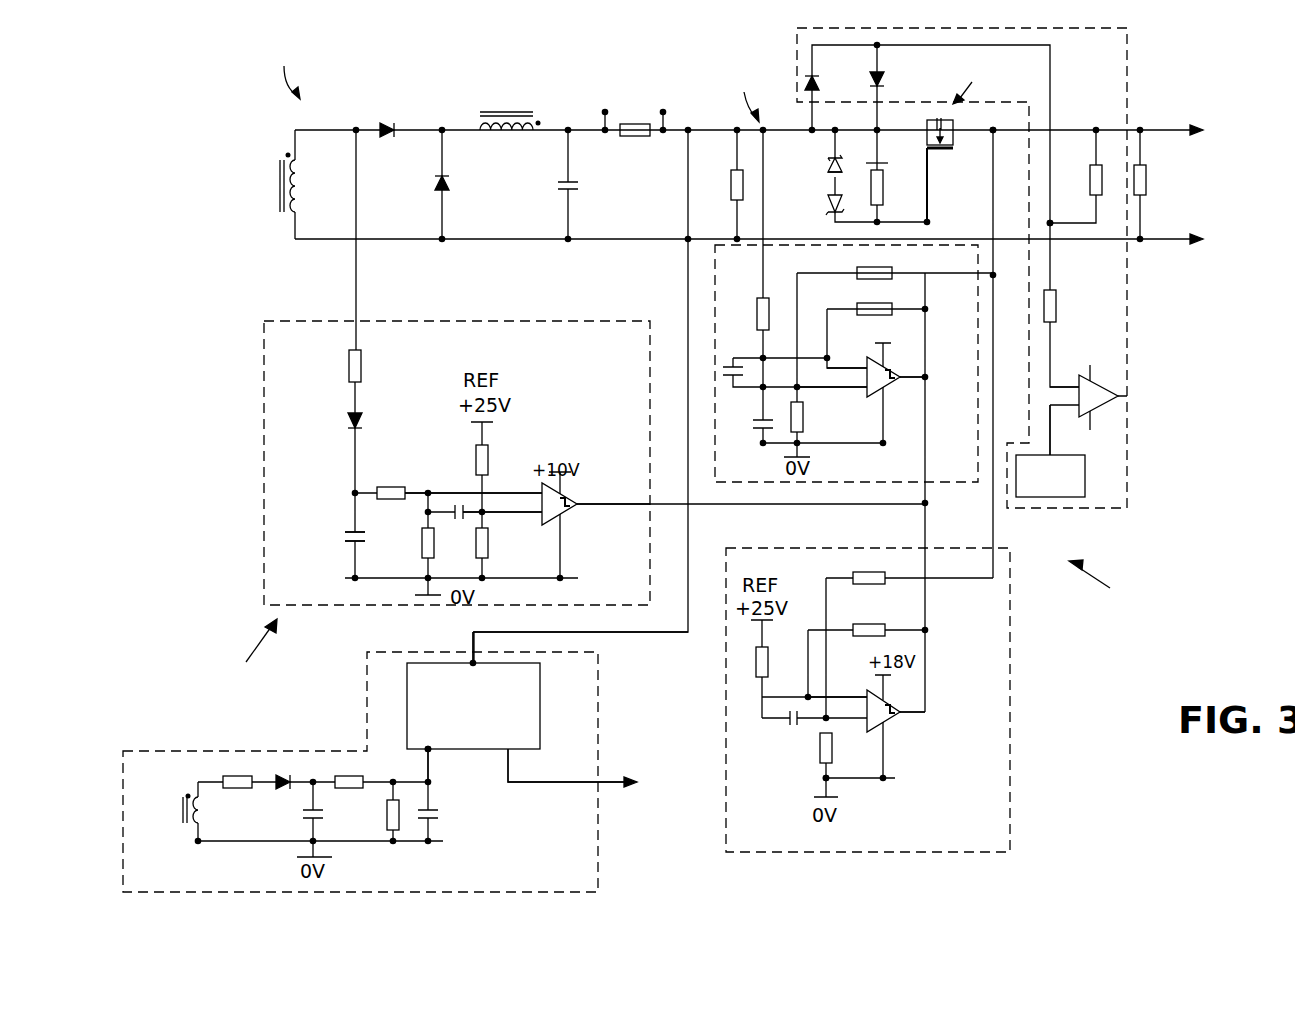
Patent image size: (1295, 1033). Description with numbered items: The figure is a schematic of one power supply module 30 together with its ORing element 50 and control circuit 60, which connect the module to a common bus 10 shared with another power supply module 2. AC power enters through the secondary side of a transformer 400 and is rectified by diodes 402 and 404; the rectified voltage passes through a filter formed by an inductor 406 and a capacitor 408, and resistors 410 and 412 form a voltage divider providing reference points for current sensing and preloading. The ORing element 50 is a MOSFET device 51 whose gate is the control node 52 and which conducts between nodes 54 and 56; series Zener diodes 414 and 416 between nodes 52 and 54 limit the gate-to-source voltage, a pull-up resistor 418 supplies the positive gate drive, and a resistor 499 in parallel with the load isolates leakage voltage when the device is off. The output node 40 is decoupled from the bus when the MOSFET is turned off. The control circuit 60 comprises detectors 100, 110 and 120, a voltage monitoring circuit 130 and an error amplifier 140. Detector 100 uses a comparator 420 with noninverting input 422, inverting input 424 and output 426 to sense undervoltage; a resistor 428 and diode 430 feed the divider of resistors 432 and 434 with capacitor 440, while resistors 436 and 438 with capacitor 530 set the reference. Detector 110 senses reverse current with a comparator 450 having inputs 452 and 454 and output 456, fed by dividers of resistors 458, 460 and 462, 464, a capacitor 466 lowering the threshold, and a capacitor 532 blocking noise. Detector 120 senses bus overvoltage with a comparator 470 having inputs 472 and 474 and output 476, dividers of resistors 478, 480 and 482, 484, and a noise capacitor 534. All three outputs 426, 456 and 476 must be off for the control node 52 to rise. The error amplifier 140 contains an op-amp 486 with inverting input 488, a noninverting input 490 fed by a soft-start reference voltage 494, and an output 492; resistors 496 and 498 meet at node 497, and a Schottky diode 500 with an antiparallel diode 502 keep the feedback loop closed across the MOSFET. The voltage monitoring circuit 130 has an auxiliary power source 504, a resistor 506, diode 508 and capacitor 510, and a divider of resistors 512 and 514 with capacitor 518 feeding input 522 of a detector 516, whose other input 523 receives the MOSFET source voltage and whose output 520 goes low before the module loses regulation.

The power supply module 2 is at (1098, 585).
The common bus 10 is at (1208, 130).
The power supply module 30 is at (281, 70).
The output node 40 is at (740, 95).
The ORing element 50 is at (962, 268).
The MOSFET device 51 is at (928, 152).
The control node 52 is at (930, 165).
The node 54 is at (912, 132).
The node 56 is at (961, 130).
The control circuit 60 is at (252, 659).
The detector 100 is at (489, 311).
The detector 110 is at (930, 486).
The detector 120 is at (720, 692).
The voltage monitoring circuit 130 is at (614, 860).
The error amplifier 140 is at (1128, 328).
The transformer 400 is at (288, 212).
The diode 402 is at (384, 123).
The diode 404 is at (436, 183).
The inductor 406 is at (504, 111).
The capacitor 408 is at (560, 183).
The resistor 410 is at (633, 122).
The resistor 412 is at (730, 189).
The diode 414 is at (826, 202).
The diode 416 is at (826, 168).
The resistor 418 is at (884, 190).
The comparator 420 is at (578, 518).
The noninverting input 422 is at (510, 483).
The inverting input 424 is at (520, 522).
The output 426 is at (606, 498).
The resistor 428 is at (361, 370).
The diode 430 is at (348, 422).
The resistor 432 is at (386, 490).
The resistor 434 is at (421, 551).
The resistor 436 is at (474, 458).
The resistor 438 is at (480, 542).
The capacitor 440 is at (346, 546).
The comparator 450 is at (888, 398).
The noninverting input 452 is at (858, 364).
The inverting input 454 is at (849, 400).
The output 456 is at (916, 378).
The resistor 458 is at (820, 430).
The resistor 460 is at (864, 284).
The resistor 462 is at (754, 314).
The resistor 464 is at (872, 316).
The capacitor 466 is at (756, 426).
The comparator 470 is at (891, 720).
The noninverting input 472 is at (839, 696).
The inverting input 474 is at (836, 726).
The output 476 is at (931, 700).
The resistor 478 is at (768, 658).
The resistor 480 is at (866, 628).
The resistor 482 is at (822, 782).
The resistor 484 is at (860, 572).
The operational amplifier 486 is at (1112, 344).
The inverting input 488 is at (1058, 383).
The noninverting input 490 is at (1070, 421).
The output 492 is at (1124, 393).
The reference voltage 494 is at (1050, 476).
The resistor 496 is at (1050, 307).
The node 497 is at (1053, 220).
The resistor 498 is at (1090, 180).
The resistor 499 is at (1138, 174).
The diode 500 is at (880, 81).
The diode 502 is at (816, 80).
The auxiliary power source 504 is at (182, 834).
The resistor 506 is at (230, 776).
The diode 508 is at (278, 791).
The capacitor 510 is at (304, 822).
The resistor 512 is at (358, 776).
The resistor 514 is at (388, 822).
The detector 516 is at (540, 724).
The capacitor 518 is at (438, 818).
The output signal 520 is at (612, 768).
The input 522 is at (428, 782).
The input 523 is at (473, 640).
The capacitor 530 is at (459, 530).
The capacitor 532 is at (735, 352).
The capacitor 534 is at (786, 726).